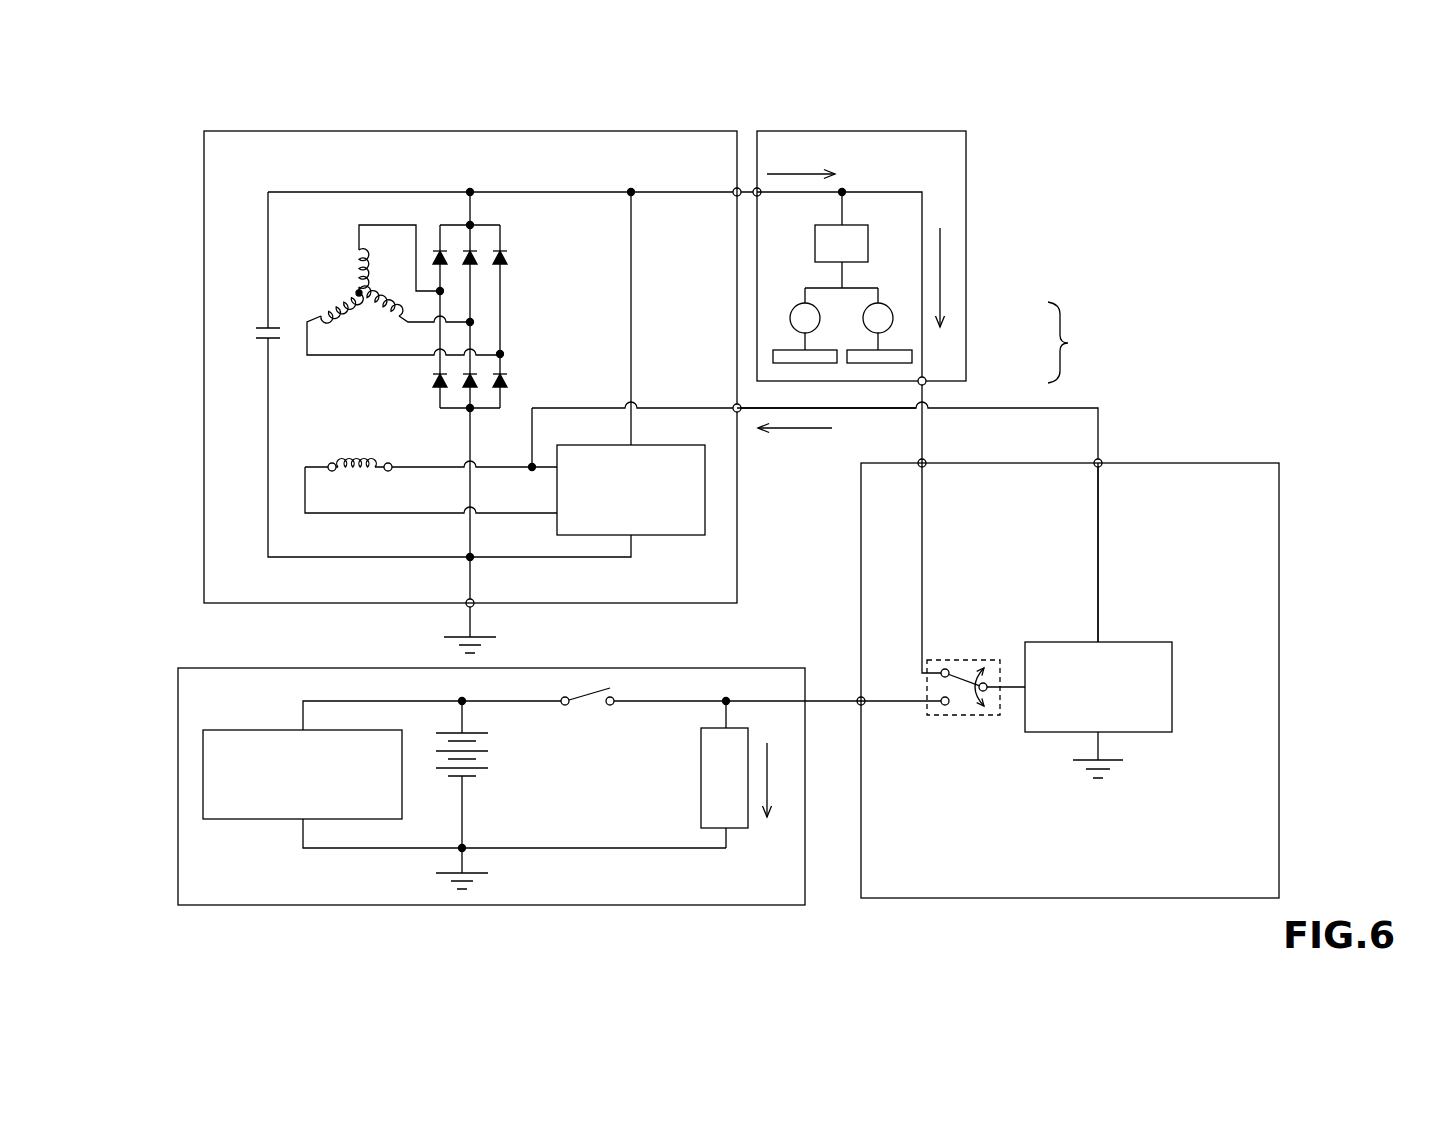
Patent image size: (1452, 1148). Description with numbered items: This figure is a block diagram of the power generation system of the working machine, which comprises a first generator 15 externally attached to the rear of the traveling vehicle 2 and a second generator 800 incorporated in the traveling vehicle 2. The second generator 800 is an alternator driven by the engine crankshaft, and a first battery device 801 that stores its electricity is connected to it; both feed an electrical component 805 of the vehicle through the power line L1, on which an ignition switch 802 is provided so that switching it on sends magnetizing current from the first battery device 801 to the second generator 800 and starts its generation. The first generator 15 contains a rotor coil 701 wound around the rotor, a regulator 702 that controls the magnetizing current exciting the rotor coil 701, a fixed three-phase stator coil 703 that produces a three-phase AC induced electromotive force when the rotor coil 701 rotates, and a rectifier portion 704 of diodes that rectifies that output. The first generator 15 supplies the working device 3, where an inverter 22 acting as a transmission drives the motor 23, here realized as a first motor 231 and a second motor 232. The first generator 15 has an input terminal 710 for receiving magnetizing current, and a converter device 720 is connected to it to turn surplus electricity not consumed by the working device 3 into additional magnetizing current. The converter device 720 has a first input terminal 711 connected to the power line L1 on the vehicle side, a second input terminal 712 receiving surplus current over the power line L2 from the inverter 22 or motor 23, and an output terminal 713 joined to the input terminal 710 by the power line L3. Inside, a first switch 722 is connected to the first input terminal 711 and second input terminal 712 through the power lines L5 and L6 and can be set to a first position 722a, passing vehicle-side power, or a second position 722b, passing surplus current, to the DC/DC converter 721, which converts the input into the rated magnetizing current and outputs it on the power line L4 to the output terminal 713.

The first generator 15 is at (650, 131).
The working device 3 is at (858, 131).
The power line L2 is at (912, 192).
The inverter 22 is at (858, 225).
The second motor 232 is at (893, 325).
The first motor 231 is at (818, 328).
The motor 23 is at (1080, 342).
The stator coil 703 is at (397, 308).
The rectifier portion 704 is at (505, 253).
The input terminal 710 is at (737, 408).
The rotor coil 701 is at (360, 460).
The regulator 702 is at (675, 535).
The output terminal 713 is at (1098, 463).
The converter device 720 is at (1228, 463).
The second input terminal 712 is at (922, 463).
The power line L4 is at (1098, 530).
The power line L6 is at (922, 553).
The power line L3 is at (847, 410).
The DC/DC converter 721 is at (1152, 642).
The second position 722b is at (948, 659).
The traveling vehicle 2 is at (773, 668).
The ignition switch 802 is at (590, 692).
The first input terminal 711 is at (858, 697).
The first switch 722 is at (988, 717).
The first position 722a is at (945, 710).
The power line L5 is at (895, 705).
The power line L1 is at (660, 705).
The first battery device 801 is at (492, 758).
The second generator 800 is at (253, 820).
The electrical component 805 is at (740, 828).